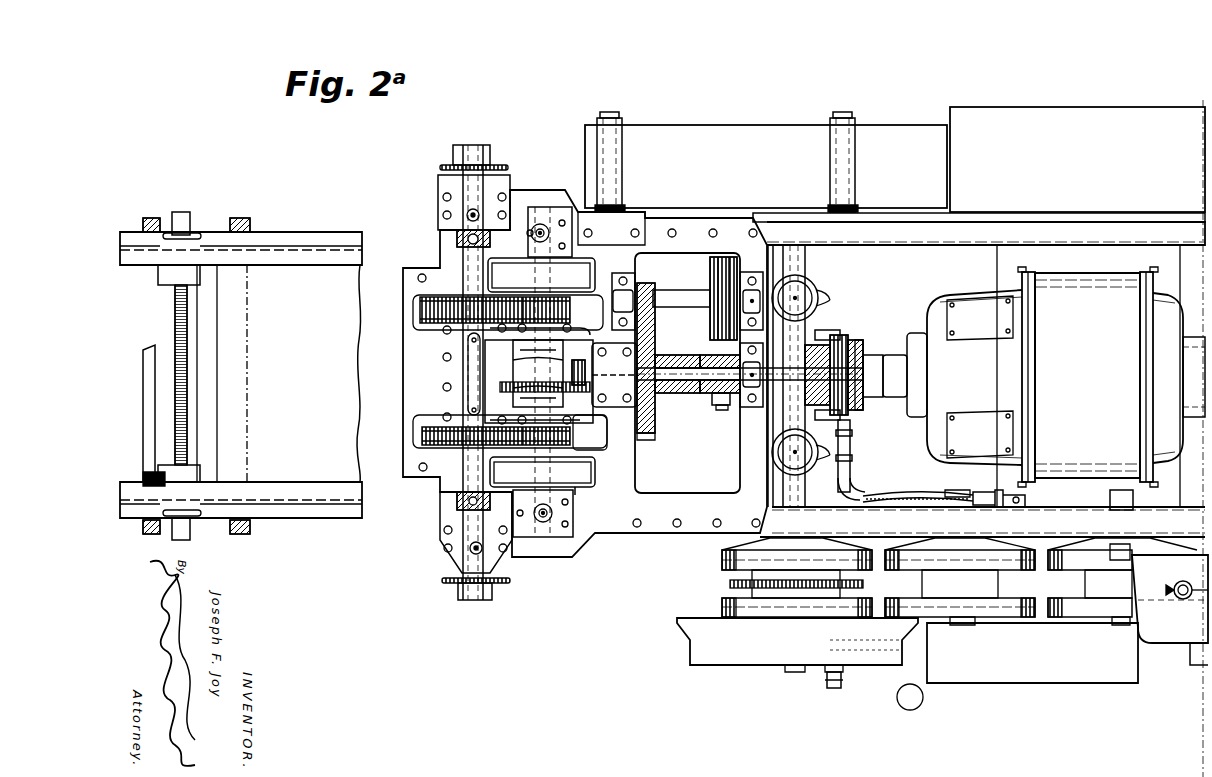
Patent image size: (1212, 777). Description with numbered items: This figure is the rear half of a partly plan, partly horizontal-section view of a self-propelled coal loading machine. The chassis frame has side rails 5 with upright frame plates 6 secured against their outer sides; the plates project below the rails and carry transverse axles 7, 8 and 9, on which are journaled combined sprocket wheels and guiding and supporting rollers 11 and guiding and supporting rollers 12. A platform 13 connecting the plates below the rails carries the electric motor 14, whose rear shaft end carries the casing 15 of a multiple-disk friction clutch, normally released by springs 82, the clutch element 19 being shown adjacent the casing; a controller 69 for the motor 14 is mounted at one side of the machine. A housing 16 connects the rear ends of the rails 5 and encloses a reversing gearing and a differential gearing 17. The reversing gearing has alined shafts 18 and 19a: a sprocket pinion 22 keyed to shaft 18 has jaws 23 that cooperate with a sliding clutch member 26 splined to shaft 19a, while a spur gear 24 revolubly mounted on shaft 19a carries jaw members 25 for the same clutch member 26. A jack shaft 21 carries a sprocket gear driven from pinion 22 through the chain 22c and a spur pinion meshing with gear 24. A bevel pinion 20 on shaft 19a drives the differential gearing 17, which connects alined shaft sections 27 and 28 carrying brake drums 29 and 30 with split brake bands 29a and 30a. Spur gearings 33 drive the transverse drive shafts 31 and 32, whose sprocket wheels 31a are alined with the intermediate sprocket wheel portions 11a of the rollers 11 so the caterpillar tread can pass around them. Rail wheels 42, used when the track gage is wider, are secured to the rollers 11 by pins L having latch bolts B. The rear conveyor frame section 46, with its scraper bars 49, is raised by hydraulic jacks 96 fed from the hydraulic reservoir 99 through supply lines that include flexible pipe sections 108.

The rear conveyor frame section 46 is at (241, 376).
The scraper bar 49 is at (143, 384).
The housing 16 is at (662, 522).
The drive shaft 31 is at (462, 470).
The sprocket wheel 31a is at (440, 167).
The drive shaft 32 is at (460, 268).
The spur gearing 33 is at (425, 432).
The shaft section 28 is at (541, 207).
The shaft section 27 is at (543, 540).
The brake band 30a is at (541, 275).
The brake band 29a is at (596, 470).
The brake drum 29 is at (592, 488).
The differential gearing 17 is at (530, 372).
The shaft 19a is at (614, 381).
The bevel pinion 20 is at (590, 432).
The brake drum 30 is at (687, 373).
The jack shaft 21 is at (681, 309).
The sliding clutch member 26 is at (676, 358).
The jaw member 25 is at (677, 398).
The jaws 23 is at (710, 393).
The sprocket pinion 22 is at (716, 395).
The chain 22c is at (722, 406).
The spur gear 24 is at (653, 433).
The shaft 18 is at (770, 390).
The transverse axle 7 is at (800, 489).
The hydraulic jack 96 is at (810, 293).
The spring 82 is at (805, 415).
The coupling flange 19 is at (858, 398).
The clutch casing 15 is at (862, 410).
The hydraulic reservoir 99 is at (766, 162).
The frame plate 6 is at (770, 214).
The side rail 5 is at (982, 379).
The platform 13 is at (997, 264).
The motor 14 is at (1044, 377).
The flexible pipe section 108 is at (918, 483).
The transverse axle 8 is at (985, 486).
The transverse axle 9 is at (1108, 494).
The combined sprocket wheel and guiding and supporting roller 11 is at (722, 558).
The intermediate sprocket wheel portion 11a is at (730, 585).
The guiding and supporting roller 12 is at (1000, 580).
The rail wheel 42 is at (690, 650).
The pin L is at (845, 675).
The latch bolt B is at (872, 650).
The controller 69 is at (1170, 619).